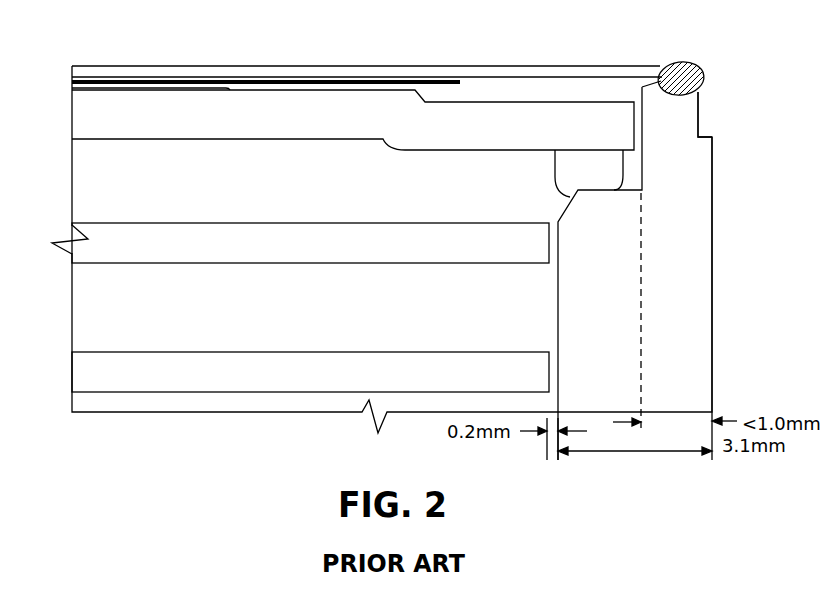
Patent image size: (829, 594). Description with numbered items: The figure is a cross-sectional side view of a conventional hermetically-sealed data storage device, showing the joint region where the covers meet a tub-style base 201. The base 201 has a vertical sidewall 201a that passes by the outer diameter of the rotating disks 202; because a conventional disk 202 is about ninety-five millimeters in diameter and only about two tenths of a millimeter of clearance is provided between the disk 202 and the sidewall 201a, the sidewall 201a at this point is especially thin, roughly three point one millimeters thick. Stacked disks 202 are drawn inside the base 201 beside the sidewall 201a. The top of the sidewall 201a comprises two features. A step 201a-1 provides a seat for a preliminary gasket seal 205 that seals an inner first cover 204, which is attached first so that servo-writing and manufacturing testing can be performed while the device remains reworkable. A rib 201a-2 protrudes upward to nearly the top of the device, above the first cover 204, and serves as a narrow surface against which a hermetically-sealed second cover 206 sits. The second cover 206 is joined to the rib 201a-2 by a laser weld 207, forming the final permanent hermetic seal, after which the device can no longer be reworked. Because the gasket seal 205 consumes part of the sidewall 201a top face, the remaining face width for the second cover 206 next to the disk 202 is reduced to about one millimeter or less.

The tub-style base 201 is at (716, 156).
The sidewall 201a is at (698, 352).
The step 201a-1 is at (630, 193).
The rib 201a-2 is at (685, 122).
The disk 202 is at (107, 245).
The first cover 204 is at (88, 118).
The gasket seal 205 is at (610, 172).
The second cover 206 is at (492, 72).
The laser weld 207 is at (702, 65).